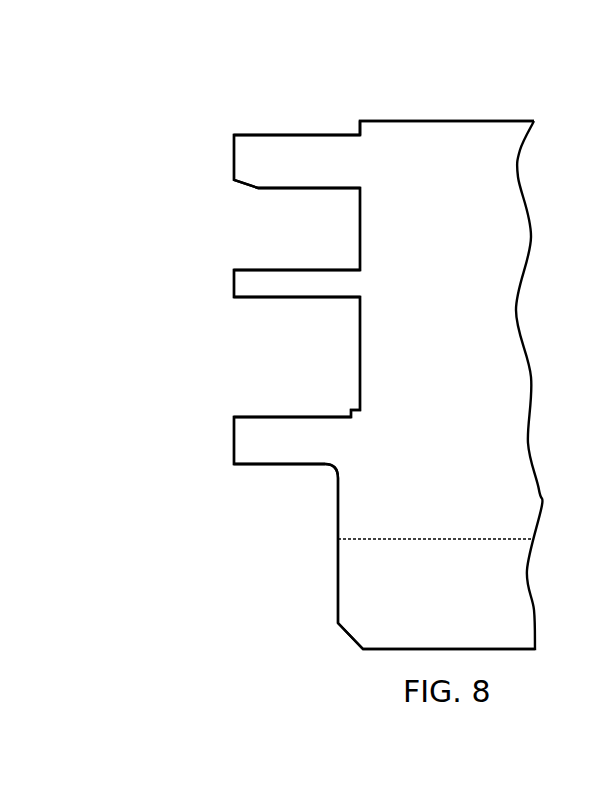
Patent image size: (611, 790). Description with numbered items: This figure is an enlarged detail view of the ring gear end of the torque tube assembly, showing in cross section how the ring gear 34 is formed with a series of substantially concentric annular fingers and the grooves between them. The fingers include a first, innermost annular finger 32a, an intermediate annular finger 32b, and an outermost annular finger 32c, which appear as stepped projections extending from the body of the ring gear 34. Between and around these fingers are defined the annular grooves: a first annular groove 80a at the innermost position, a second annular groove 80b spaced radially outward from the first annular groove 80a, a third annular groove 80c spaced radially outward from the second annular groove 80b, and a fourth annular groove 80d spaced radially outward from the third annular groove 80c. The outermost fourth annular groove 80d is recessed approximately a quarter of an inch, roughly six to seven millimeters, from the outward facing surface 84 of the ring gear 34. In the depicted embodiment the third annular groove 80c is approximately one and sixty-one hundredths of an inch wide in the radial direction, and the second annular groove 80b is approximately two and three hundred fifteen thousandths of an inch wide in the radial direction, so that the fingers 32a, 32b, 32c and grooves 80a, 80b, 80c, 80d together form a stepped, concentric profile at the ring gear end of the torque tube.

The ring gear 34 is at (487, 150).
The outward facing surface 84 is at (402, 120).
The first, innermost annular finger 32a is at (262, 437).
The intermediate annular finger 32b is at (248, 285).
The outermost annular finger 32c is at (262, 158).
The first annular groove 80a is at (262, 531).
The second annular groove 80b is at (280, 358).
The third annular groove 80c is at (265, 231).
The fourth annular groove 80d is at (270, 121).